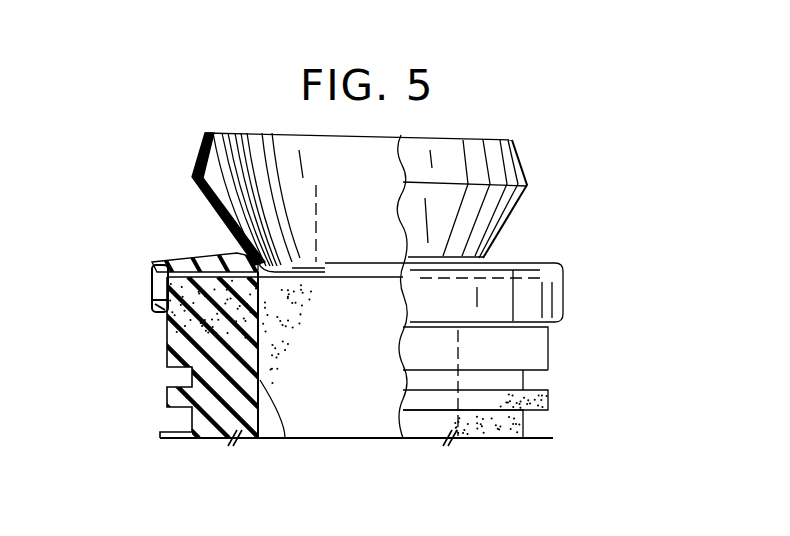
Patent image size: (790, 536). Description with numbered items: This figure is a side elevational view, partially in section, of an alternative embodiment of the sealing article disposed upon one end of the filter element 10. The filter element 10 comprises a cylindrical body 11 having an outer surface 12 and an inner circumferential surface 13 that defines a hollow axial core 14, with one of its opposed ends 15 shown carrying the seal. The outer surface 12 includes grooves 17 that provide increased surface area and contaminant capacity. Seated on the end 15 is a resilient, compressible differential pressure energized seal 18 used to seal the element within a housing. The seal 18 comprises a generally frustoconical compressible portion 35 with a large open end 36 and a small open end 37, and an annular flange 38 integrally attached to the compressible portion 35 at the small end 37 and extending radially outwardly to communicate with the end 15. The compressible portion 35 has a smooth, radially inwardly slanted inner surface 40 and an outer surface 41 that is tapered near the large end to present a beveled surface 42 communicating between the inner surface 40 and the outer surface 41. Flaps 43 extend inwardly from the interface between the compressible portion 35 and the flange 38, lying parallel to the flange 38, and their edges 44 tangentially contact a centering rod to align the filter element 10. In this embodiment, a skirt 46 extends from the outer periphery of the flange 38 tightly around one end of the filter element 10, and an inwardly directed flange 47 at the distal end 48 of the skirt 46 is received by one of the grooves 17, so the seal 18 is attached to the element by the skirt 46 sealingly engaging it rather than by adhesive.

The filter element 10 is at (572, 390).
The cylindrical structure or body 11 is at (553, 348).
The outer surface 12 is at (550, 403).
The inner circumferential surface 13 is at (285, 438).
The hollow axial core 14 is at (353, 418).
The end 15 is at (167, 357).
The grooves 17 is at (192, 318).
The differential pressure energized seal 18 is at (540, 162).
The compressible portion 35 is at (203, 163).
The large open end 36 is at (226, 134).
The small open end 37 is at (320, 280).
The annular flange 38 is at (215, 263).
The inner surface 40 is at (240, 196).
The outer surface 41 is at (242, 192).
The beveled surface 42 is at (518, 150).
The flaps 43 is at (283, 263).
The edges 44 is at (292, 270).
The skirt 46 is at (153, 283).
The inwardly directed flange 47 is at (227, 300).
The distal end 48 is at (152, 313).